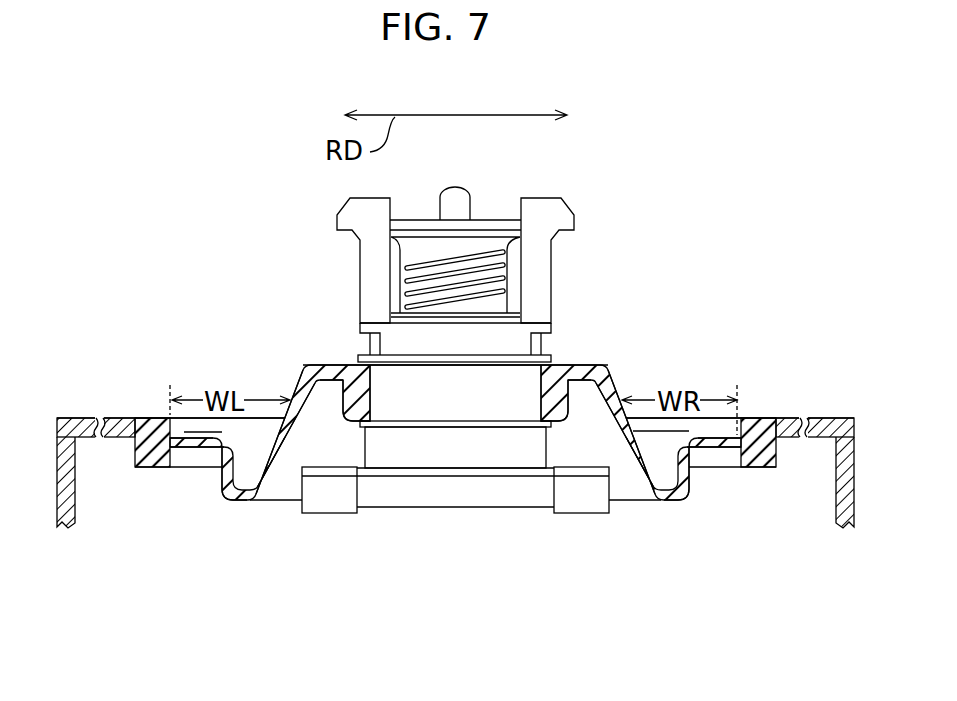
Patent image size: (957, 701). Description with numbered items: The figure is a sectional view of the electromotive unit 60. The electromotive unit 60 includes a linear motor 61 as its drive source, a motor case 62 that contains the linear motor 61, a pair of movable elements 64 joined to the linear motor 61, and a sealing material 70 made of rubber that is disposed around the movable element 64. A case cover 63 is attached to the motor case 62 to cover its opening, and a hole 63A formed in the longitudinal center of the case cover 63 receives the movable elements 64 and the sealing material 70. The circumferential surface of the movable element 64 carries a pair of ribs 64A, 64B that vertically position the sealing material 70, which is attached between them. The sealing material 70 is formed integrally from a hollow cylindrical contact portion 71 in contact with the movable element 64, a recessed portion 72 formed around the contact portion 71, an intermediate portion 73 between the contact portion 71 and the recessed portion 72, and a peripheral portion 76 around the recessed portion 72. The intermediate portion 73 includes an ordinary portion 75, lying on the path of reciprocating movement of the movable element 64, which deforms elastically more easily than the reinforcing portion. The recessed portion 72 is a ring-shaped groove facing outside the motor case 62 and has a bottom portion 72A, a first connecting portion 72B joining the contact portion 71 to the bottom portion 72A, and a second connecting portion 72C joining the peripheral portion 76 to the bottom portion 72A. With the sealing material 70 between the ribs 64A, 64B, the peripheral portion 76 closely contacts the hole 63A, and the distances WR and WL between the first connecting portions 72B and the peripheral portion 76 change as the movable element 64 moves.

The electromotive unit 60 is at (693, 259).
The linear motor 61 is at (345, 507).
The motor case 62 is at (70, 510).
The case cover 63 is at (840, 418).
The hole 63A is at (140, 418).
The movable element 64 is at (542, 205).
The rib 64A is at (360, 356).
The rib 64B is at (358, 424).
The sealing material 70 is at (582, 365).
The contact portion 71 is at (367, 403).
The recessed portion 72 is at (647, 482).
The bottom portion 72A is at (235, 500).
The first connecting portion 72B is at (260, 482).
The second connecting portion 72C is at (227, 472).
The intermediate portion 73 is at (308, 367).
The ordinary portion 75 is at (607, 365).
The peripheral portion 76 is at (135, 450).